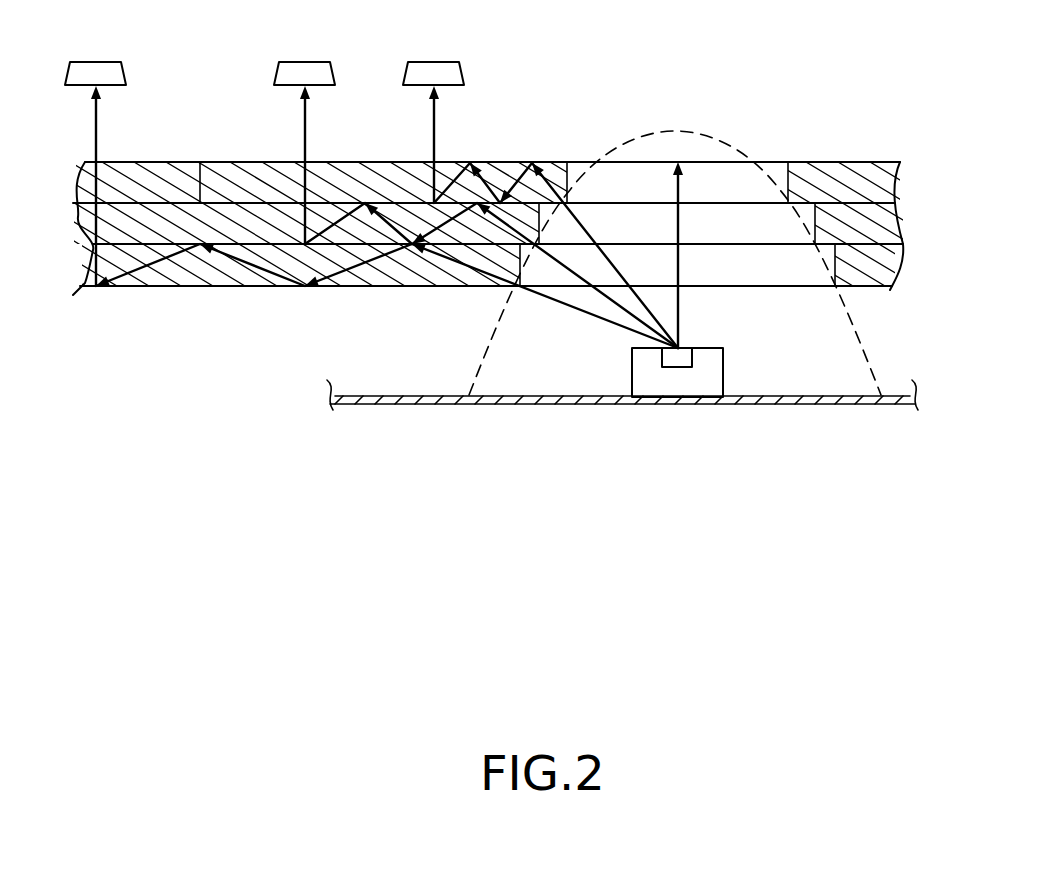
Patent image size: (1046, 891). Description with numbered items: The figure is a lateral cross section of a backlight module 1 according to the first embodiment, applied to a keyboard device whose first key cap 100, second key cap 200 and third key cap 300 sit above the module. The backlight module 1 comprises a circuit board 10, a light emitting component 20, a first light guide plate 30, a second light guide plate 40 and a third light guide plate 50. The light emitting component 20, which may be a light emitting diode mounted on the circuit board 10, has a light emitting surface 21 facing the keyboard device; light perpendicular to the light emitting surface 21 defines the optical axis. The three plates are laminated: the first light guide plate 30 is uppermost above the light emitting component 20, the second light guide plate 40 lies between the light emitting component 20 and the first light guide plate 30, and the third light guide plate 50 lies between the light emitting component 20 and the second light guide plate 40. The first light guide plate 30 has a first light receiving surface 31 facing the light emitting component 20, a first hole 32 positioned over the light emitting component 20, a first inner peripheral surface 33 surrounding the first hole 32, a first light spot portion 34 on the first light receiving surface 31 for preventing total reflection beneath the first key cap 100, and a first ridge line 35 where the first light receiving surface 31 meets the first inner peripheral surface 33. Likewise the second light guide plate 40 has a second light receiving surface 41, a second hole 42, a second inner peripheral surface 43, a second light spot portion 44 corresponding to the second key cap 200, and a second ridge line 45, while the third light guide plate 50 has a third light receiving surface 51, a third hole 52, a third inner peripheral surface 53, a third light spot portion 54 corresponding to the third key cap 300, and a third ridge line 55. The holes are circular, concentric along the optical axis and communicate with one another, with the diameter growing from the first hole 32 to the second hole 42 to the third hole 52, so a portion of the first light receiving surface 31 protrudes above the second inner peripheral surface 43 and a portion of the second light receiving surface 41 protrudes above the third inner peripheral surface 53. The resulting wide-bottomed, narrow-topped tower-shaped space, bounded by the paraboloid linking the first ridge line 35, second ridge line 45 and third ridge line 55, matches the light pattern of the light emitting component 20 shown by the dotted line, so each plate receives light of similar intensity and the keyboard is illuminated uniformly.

The backlight module 1 is at (143, 410).
The circuit board 10 is at (562, 404).
The light emitting component 20 is at (680, 384).
The light emitting surface 21 is at (693, 348).
The first light guide plate 30 is at (868, 187).
The first light receiving surface 31 is at (199, 163).
The first hole 32 is at (725, 152).
The first inner peripheral surface 33 is at (569, 162).
The first light spot portion 34 is at (431, 162).
The first ridge line 35 is at (790, 204).
The second light guide plate 40 is at (883, 229).
The second light receiving surface 41 is at (395, 247).
The second hole 42 is at (637, 192).
The second inner peripheral surface 43 is at (545, 228).
The second light spot portion 44 is at (303, 163).
The second ridge line 45 is at (814, 245).
The third light guide plate 50 is at (873, 268).
The third light receiving surface 51 is at (314, 288).
The third hole 52 is at (750, 298).
The third inner peripheral surface 53 is at (522, 268).
The third light spot portion 54 is at (98, 288).
The third ridge line 55 is at (834, 287).
The first key cap 100 is at (443, 67).
The second key cap 200 is at (320, 63).
The third key cap 300 is at (90, 68).